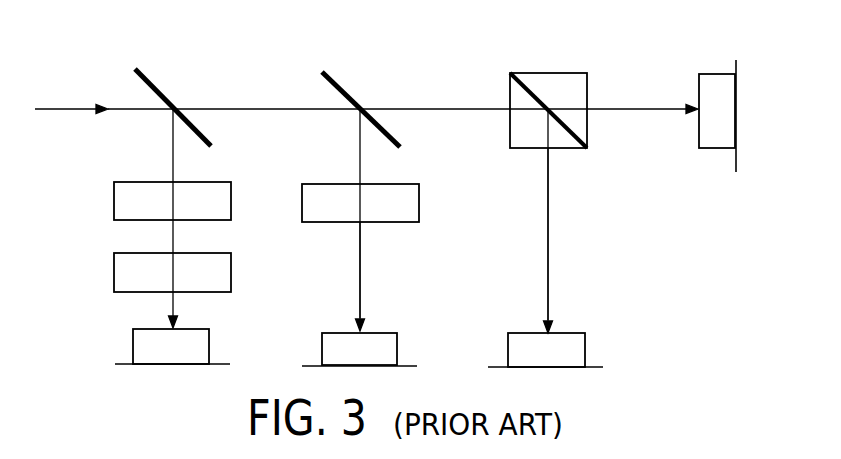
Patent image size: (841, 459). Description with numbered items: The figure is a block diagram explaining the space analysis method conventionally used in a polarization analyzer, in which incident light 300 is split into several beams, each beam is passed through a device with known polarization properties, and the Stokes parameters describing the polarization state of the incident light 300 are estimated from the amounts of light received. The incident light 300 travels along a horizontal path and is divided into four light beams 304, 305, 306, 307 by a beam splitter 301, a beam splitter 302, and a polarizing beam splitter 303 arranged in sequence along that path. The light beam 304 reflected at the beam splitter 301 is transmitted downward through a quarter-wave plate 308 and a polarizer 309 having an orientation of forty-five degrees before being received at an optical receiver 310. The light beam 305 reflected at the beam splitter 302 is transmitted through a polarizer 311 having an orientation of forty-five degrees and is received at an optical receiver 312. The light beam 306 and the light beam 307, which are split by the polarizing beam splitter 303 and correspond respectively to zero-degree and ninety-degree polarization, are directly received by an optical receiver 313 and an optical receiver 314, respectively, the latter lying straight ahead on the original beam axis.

The incident light 300 is at (63, 106).
The beam splitter 301 is at (170, 77).
The beam splitter 302 is at (362, 78).
The polarizing beam splitter 303 is at (566, 72).
The light beam 304 is at (176, 303).
The light beam 305 is at (362, 270).
The light beam 306 is at (550, 242).
The light beam 307 is at (635, 106).
The λ/4 plate 308 is at (113, 200).
The polarizer 309 is at (113, 270).
The optical receiver 310 is at (132, 343).
The polarizer 311 is at (421, 205).
The optical receiver 312 is at (399, 352).
The optical receiver 313 is at (587, 353).
The optical receiver 314 is at (737, 95).